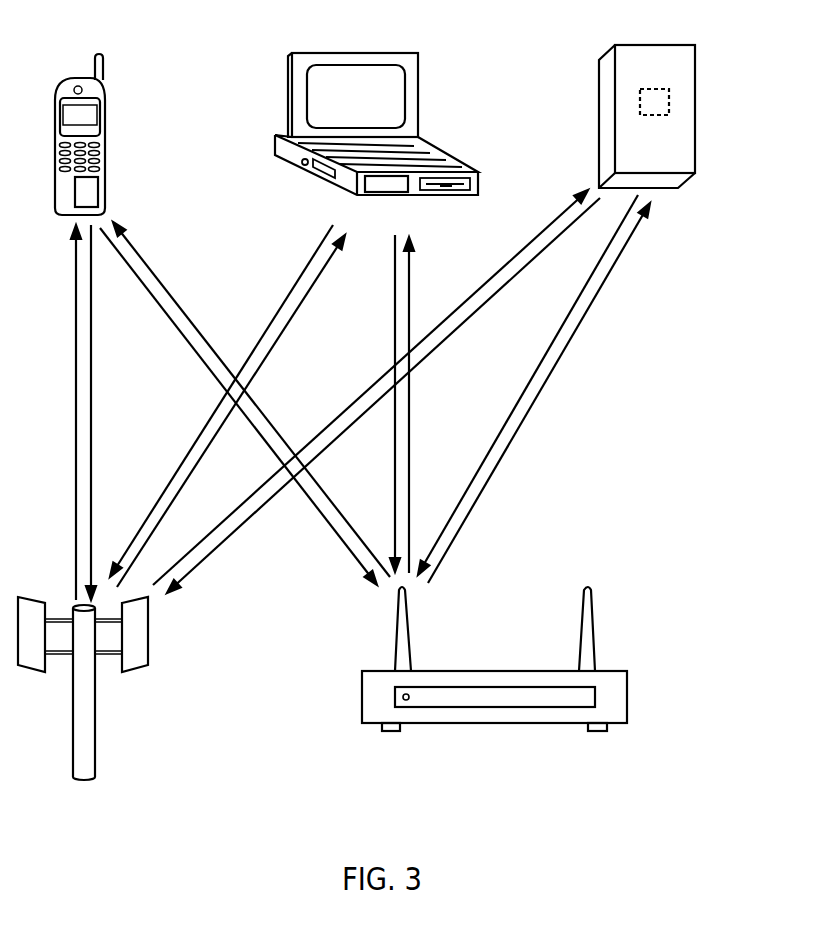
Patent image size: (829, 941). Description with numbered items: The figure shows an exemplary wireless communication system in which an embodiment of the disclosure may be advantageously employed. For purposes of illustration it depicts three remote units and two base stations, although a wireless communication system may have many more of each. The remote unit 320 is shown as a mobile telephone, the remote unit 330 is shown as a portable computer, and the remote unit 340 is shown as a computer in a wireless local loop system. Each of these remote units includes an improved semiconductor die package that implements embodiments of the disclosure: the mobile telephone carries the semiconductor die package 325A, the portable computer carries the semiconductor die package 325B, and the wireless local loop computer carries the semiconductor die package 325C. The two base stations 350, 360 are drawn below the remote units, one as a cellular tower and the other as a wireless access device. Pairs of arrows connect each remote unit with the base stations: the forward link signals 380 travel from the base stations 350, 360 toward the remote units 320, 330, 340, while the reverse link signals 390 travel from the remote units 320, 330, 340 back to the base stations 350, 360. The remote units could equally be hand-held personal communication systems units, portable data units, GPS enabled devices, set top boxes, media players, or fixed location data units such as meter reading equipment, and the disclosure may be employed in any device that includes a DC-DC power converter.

The remote unit 320 is at (80, 78).
The semiconductor die package 325A is at (87, 197).
The remote unit 330 is at (375, 53).
The semiconductor die package 325B is at (373, 182).
The remote unit 340 is at (651, 45).
The semiconductor die package 325C is at (670, 102).
The base station 350 is at (95, 715).
The base station 360 is at (612, 671).
The forward link signals 380 is at (76, 397).
The reverse link signals 390 is at (91, 397).